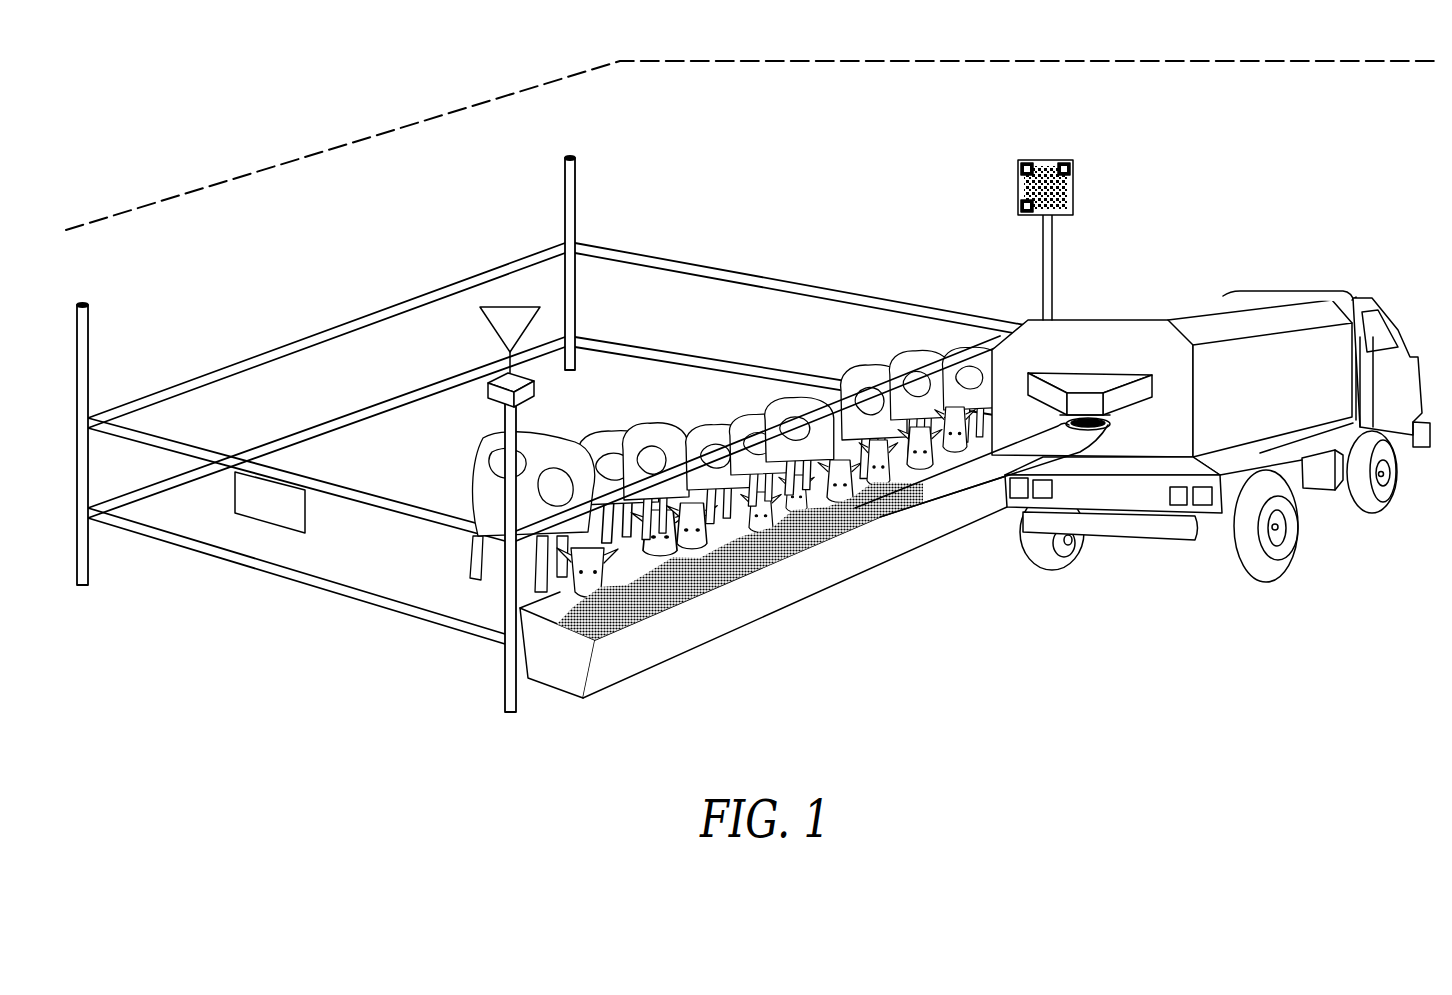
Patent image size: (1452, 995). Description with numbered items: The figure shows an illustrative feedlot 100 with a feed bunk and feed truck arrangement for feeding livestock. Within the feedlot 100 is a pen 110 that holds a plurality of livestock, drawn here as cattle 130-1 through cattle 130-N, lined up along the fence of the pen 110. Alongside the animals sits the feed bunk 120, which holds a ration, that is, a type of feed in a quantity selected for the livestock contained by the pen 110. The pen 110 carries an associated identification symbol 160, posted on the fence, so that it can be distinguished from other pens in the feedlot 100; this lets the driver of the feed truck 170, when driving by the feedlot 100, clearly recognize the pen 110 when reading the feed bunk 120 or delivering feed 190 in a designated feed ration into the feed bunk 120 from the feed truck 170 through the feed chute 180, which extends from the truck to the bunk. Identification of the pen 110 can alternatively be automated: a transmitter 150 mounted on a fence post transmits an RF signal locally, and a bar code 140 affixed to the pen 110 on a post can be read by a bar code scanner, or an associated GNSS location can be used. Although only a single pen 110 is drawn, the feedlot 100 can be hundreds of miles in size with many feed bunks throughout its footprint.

The feedlot 100 is at (365, 137).
The pen 110 is at (753, 273).
The feed bunk 120 is at (695, 638).
The cattle 130-1 is at (473, 455).
The cattle 130-N is at (912, 350).
The bar code 140 is at (1052, 157).
The transmitter 150 is at (512, 303).
The identification symbol 160 is at (265, 517).
The feed truck 170 is at (1295, 293).
The feed chute 180 is at (973, 473).
The feed 190 is at (873, 520).